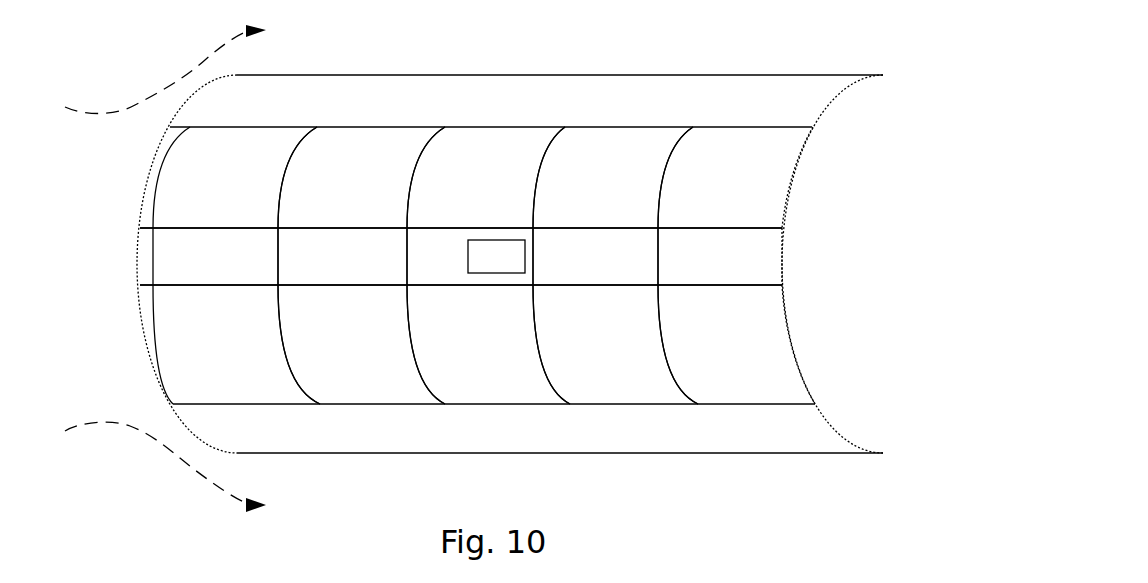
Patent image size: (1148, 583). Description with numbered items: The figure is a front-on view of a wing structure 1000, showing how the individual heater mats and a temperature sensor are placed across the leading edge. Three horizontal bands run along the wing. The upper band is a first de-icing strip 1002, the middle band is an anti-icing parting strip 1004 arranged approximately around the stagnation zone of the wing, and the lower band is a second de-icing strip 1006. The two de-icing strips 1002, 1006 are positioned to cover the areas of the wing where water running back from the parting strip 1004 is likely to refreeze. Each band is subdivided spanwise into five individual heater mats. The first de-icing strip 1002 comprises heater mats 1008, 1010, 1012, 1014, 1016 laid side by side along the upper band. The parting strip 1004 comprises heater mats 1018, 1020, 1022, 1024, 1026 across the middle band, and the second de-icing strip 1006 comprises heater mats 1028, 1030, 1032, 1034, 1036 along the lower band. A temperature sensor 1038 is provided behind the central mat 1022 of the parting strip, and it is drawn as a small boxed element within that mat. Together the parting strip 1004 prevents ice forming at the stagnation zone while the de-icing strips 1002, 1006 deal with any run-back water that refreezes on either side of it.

The wing structure 1000 is at (746, 38).
The first de-icing strip 1002 is at (792, 180).
The anti-icing parting strip 1004 is at (782, 258).
The second de-icing strip 1006 is at (790, 336).
The heater mat 1008 is at (240, 191).
The heater mat 1010 is at (366, 191).
The heater mat 1012 is at (494, 191).
The heater mat 1014 is at (619, 191).
The heater mat 1016 is at (746, 191).
The heater mat 1018 is at (224, 266).
The heater mat 1020 is at (356, 266).
The central heater mat 1022 is at (458, 266).
The heater mat 1024 is at (608, 266).
The heater mat 1026 is at (731, 266).
The heater mat 1028 is at (241, 356).
The heater mat 1030 is at (371, 356).
The heater mat 1032 is at (493, 356).
The heater mat 1034 is at (624, 356).
The heater mat 1036 is at (751, 356).
The temperature sensor 1038 is at (518, 266).